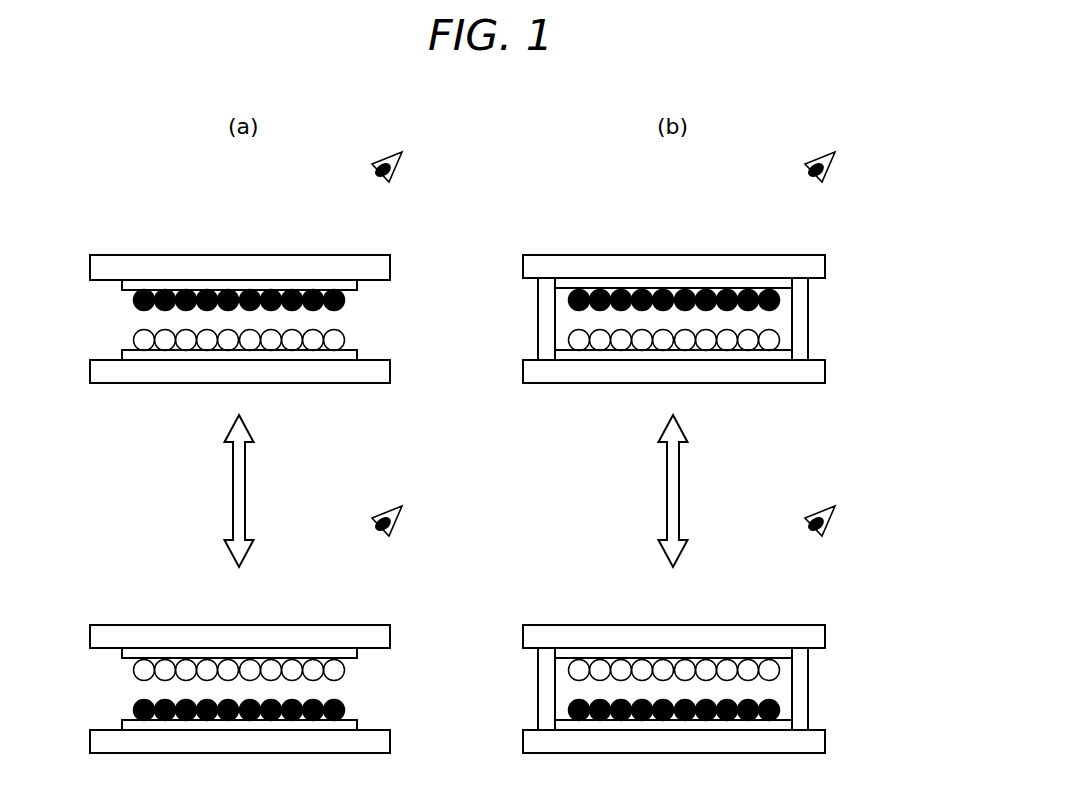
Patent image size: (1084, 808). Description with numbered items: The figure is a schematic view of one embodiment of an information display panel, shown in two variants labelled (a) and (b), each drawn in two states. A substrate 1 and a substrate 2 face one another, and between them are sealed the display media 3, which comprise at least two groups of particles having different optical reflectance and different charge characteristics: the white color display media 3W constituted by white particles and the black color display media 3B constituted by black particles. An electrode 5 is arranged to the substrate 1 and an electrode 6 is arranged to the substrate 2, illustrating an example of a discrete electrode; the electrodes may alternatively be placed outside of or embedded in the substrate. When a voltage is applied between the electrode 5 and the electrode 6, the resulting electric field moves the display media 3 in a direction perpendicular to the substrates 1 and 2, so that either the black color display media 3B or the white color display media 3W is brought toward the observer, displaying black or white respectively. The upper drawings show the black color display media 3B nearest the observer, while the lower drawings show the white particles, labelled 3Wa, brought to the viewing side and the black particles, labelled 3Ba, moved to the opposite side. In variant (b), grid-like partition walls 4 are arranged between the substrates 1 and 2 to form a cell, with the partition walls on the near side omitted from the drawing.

The substrate 1 is at (176, 372).
The substrate 2 is at (239, 268).
The display media 3 is at (461, 280).
The black color display media 3B is at (365, 280).
The white color display media 3W is at (365, 327).
The white particles (moved state) 3Wa is at (346, 670).
The black particles (moved state) 3Ba is at (346, 708).
The partition walls 4 is at (799, 298).
The electrode 5 is at (312, 355).
The electrode 6 is at (313, 285).